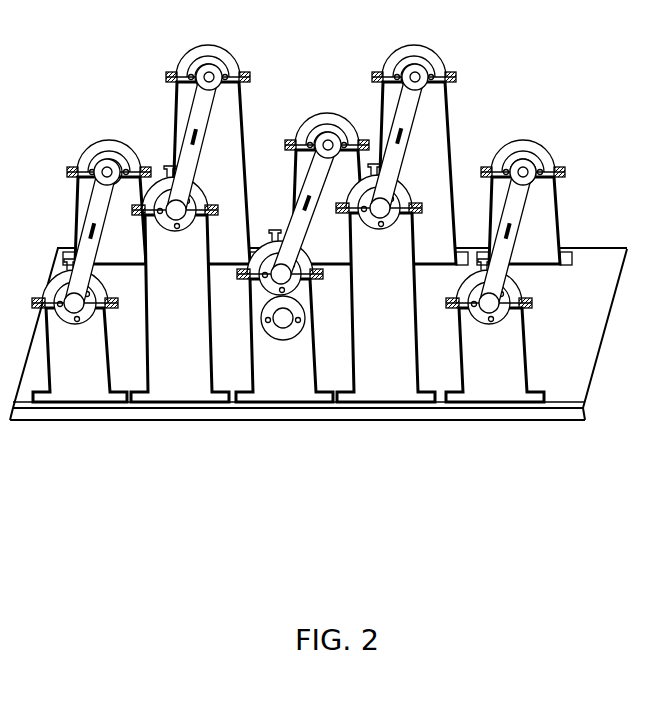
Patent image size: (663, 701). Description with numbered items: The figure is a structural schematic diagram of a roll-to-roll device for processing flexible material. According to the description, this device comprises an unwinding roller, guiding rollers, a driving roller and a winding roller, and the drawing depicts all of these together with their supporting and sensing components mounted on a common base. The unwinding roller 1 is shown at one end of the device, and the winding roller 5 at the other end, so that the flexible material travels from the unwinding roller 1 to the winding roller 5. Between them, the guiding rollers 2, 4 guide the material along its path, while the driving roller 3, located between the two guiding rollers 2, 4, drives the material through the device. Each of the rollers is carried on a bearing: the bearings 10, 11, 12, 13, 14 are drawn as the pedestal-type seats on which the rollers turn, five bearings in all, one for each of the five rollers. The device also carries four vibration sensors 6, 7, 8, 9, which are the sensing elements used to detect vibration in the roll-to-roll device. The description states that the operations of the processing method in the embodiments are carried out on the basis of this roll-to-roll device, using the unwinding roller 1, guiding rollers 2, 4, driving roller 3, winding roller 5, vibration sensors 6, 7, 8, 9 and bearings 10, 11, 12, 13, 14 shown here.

The unwinding roller 1 is at (126, 136).
The guiding roller 2 is at (210, 136).
The driving roller 3 is at (328, 136).
The guiding roller 4 is at (416, 136).
The winding roller 5 is at (528, 136).
The vibration sensor 6 is at (124, 313).
The vibration sensor 7 is at (234, 266).
The vibration sensor 8 is at (344, 300).
The vibration sensor 9 is at (554, 313).
The bearing 10 is at (83, 363).
The bearing 11 is at (192, 317).
The bearing 12 is at (311, 382).
The bearing 13 is at (410, 316).
The bearing 14 is at (505, 363).